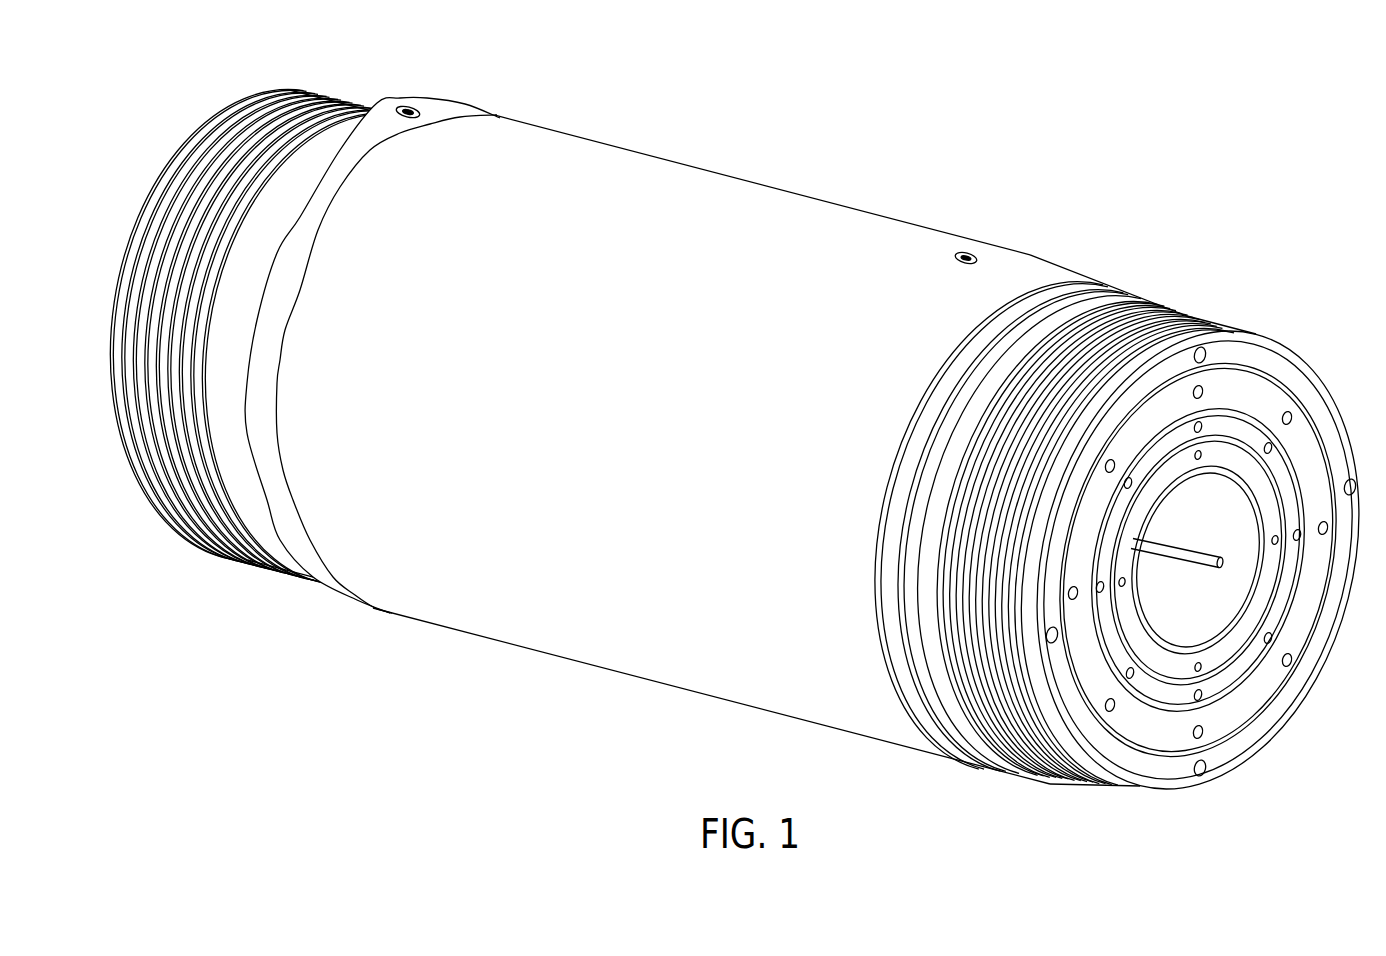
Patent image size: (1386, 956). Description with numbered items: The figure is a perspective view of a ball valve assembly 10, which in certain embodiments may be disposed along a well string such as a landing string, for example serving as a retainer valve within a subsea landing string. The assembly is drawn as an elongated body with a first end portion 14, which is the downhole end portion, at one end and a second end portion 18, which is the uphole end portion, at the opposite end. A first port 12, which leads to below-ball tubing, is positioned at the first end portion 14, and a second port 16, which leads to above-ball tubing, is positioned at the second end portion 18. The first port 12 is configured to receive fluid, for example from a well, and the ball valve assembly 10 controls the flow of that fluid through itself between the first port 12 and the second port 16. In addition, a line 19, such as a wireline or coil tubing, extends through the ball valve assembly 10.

The ball valve assembly 10 is at (838, 128).
The first port 12 is at (1227, 630).
The first end portion 14 is at (1230, 300).
The second port 16 is at (151, 197).
The second end portion 18 is at (295, 73).
The line 19 is at (1166, 551).